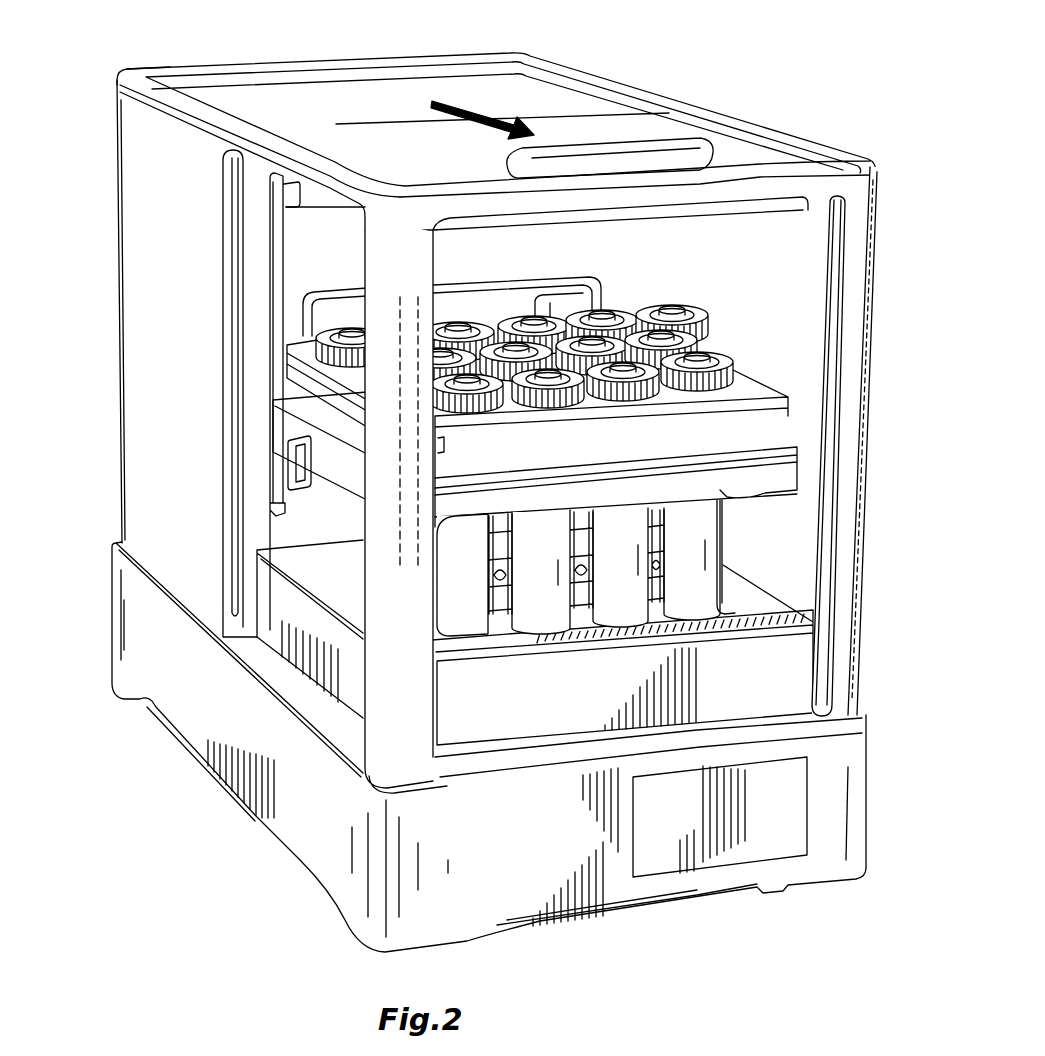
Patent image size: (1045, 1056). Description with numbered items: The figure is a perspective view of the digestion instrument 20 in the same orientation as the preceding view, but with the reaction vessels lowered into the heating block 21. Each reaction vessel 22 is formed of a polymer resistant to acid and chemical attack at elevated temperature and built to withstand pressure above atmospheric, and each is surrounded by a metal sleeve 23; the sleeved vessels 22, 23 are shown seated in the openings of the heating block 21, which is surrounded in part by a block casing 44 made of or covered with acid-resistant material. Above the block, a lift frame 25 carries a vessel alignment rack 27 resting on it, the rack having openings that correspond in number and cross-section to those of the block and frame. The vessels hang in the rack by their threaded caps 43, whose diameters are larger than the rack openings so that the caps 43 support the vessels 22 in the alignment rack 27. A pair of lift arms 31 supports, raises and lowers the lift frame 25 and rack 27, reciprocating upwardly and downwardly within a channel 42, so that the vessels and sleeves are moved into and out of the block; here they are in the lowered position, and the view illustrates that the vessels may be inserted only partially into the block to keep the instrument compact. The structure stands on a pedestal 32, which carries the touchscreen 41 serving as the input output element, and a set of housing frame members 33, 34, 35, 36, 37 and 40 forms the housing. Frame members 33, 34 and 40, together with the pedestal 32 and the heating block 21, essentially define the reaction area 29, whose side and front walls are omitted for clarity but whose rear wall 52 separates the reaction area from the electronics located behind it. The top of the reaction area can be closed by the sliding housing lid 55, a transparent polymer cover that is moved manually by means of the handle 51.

The digestion instrument 20 is at (826, 88).
The heating block 21 is at (733, 607).
The reaction vessel 22 is at (673, 343).
The metal sleeve 23 is at (630, 570).
The lift frame 25 is at (727, 478).
The vessel alignment rack 27 is at (655, 455).
The reaction area 29 is at (781, 322).
The lift arm 31 is at (284, 467).
The pedestal 32 is at (318, 812).
The housing frame member 33 is at (857, 500).
The housing frame member 34 is at (704, 199).
The housing frame member 35 is at (702, 112).
The housing frame member 36 is at (133, 100).
The housing frame member 37 is at (188, 68).
The housing frame member 40 is at (405, 717).
The touchscreen 41 is at (680, 820).
The channel 42 is at (277, 298).
The threaded cap 43 is at (528, 397).
The block casing 44 is at (537, 723).
The handle 51 is at (521, 165).
The rear wall 52 is at (577, 264).
The sliding housing lid 55 is at (600, 130).